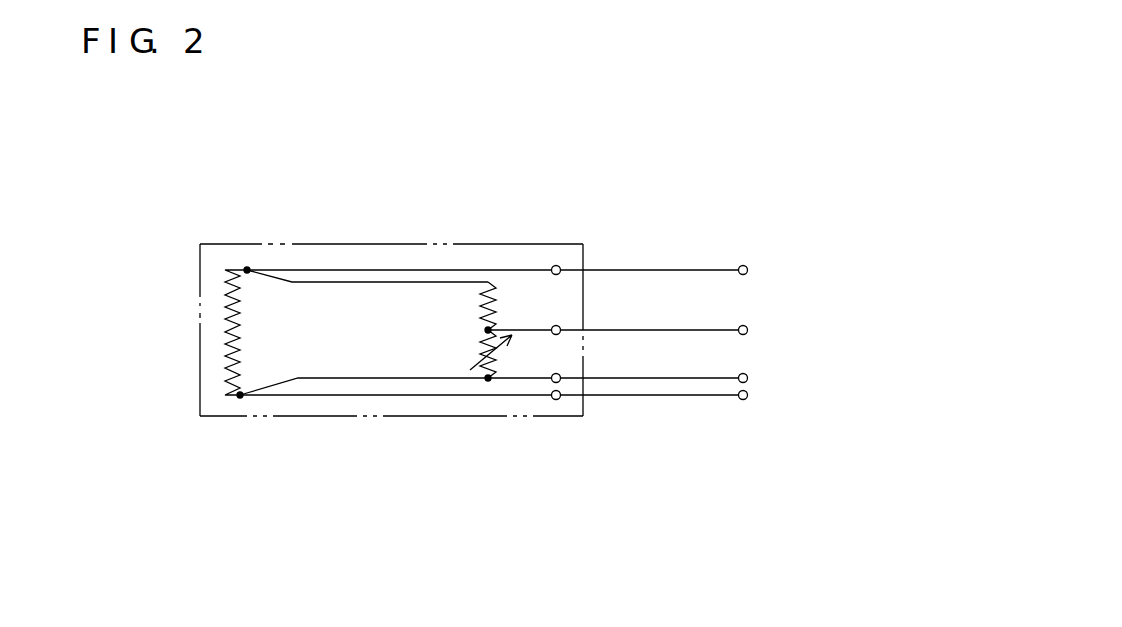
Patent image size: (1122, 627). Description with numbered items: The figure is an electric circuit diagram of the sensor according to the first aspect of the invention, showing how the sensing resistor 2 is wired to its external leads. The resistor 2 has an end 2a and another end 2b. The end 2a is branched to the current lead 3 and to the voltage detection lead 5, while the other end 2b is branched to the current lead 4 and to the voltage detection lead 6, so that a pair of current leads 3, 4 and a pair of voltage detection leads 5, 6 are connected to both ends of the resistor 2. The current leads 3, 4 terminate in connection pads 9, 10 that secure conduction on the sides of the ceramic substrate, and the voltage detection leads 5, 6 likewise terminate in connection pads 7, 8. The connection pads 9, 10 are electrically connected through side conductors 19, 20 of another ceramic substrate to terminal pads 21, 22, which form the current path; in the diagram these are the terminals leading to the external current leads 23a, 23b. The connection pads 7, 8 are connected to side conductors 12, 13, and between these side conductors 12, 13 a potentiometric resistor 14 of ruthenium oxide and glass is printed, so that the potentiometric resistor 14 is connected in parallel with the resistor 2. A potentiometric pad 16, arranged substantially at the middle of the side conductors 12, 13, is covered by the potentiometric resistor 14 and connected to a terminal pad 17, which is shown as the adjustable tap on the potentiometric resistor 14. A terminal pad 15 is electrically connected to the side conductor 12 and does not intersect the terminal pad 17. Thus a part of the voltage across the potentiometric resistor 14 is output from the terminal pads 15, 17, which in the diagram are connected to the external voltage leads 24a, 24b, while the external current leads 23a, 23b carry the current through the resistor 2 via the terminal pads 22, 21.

The resistor 2 is at (241, 326).
The end of the resistor 2a is at (247, 268).
The another end of the resistor 2b is at (240, 398).
The current lead 3 is at (493, 238).
The connection pad 9 is at (493, 238).
The side conductor 20 is at (413, 268).
The voltage detection lead 5 is at (367, 222).
The connection pad 7 is at (367, 222).
The side conductor 13 is at (310, 282).
The voltage detection lead 6 is at (489, 441).
The connection pad 8 is at (489, 441).
The side conductor 12 is at (328, 378).
The current lead 4 is at (489, 439).
The connection pad 10 is at (489, 439).
The side conductor 19 is at (425, 396).
The potentiometric resistor 14 is at (482, 353).
The potentiometric pad 16 is at (527, 329).
The terminal pad 22 is at (558, 265).
The terminal pad 17 is at (561, 327).
The terminal pad 15 is at (561, 374).
The terminal pad 21 is at (557, 400).
The current lead 23a is at (741, 266).
The voltage lead 24a is at (741, 326).
The voltage lead 24b is at (741, 374).
The current lead 23b is at (742, 400).